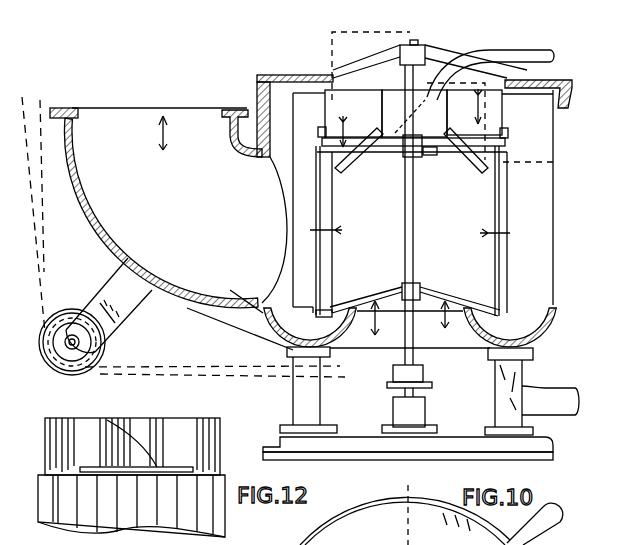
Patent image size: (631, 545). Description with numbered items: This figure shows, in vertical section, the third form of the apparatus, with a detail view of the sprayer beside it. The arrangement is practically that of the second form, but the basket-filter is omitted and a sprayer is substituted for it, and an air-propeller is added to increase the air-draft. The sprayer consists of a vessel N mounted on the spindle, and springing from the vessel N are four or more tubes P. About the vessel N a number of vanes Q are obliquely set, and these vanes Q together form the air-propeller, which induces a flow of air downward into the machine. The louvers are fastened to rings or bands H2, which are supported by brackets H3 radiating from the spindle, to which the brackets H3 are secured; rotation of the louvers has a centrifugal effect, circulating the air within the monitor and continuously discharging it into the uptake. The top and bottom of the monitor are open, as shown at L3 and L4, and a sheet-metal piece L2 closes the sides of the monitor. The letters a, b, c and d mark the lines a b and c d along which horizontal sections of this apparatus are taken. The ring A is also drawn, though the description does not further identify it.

In FIG. 10, the section line a b a is at (332, 100).
In FIG. 10, the section line a b is at (374, 59).
In FIG. 10, the section line c d c is at (409, 249).
In FIG. 10, the section line c d is at (553, 162).
In FIG. 10, the frame ring A is at (498, 214).
In FIG. 12, the frame ring A is at (131, 506).
In FIG. 10, the vessel N is at (414, 113).
In FIG. 12, the vessel N is at (150, 420).
In FIG. 10, the tubes P is at (411, 159).
In FIG. 10, the vanes Q is at (413, 118).
In FIG. 12, the vanes Q is at (118, 418).
In FIG. 10, the rings or bands H2 is at (505, 112).
In FIG. 10, the brackets H3 is at (502, 172).
In FIG. 10, the sheet-metal piece L2 is at (555, 265).
In FIG. 10, the top opening of monitor L3 is at (322, 72).
In FIG. 10, the bottom opening of monitor L4 is at (388, 334).